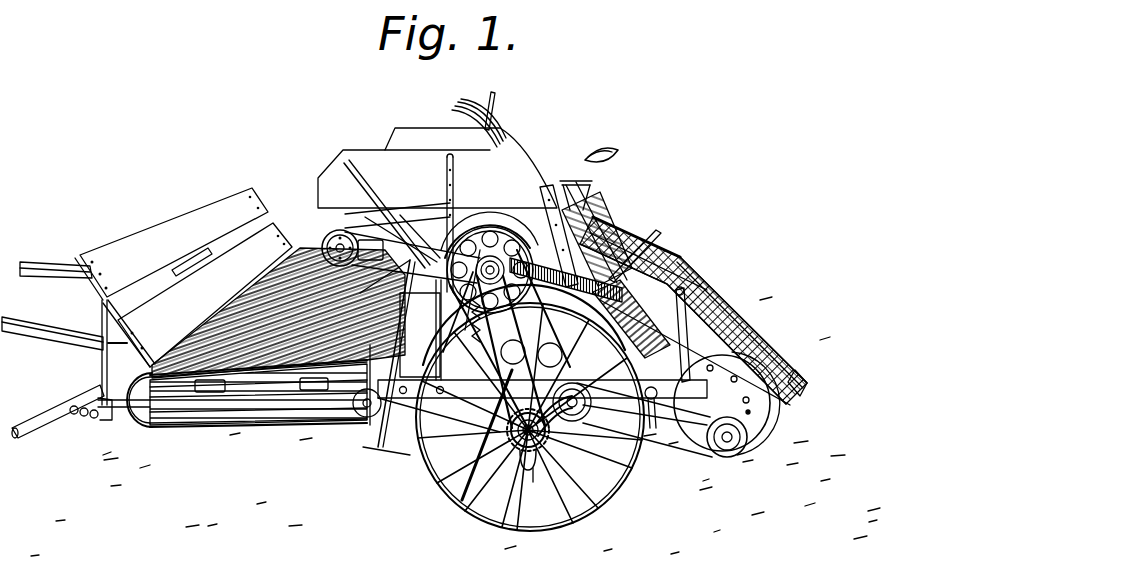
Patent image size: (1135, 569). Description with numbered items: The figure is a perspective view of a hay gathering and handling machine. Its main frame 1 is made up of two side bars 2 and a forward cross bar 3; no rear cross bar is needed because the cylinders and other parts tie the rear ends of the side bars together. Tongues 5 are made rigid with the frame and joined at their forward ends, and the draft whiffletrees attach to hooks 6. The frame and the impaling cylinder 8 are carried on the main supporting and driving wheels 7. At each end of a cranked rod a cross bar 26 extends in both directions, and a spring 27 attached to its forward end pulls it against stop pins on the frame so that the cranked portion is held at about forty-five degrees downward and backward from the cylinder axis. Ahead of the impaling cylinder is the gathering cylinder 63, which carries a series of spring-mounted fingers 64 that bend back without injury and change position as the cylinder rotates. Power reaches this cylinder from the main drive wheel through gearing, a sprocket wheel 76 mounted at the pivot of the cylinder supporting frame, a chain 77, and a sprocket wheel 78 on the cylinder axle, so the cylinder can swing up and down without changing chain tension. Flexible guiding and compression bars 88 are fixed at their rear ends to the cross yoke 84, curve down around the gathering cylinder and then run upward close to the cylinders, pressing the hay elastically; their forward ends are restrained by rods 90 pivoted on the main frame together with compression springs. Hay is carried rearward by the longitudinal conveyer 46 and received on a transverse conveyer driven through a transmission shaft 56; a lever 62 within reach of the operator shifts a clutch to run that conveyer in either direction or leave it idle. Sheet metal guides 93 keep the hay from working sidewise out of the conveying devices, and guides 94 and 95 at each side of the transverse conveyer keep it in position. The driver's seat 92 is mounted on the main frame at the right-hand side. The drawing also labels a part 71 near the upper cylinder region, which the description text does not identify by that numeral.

The main frame 1 is at (392, 400).
The side bars 2 is at (530, 408).
The forward cross bar 3 is at (490, 420).
The tongues 5 is at (72, 272).
The hooks 6 is at (78, 416).
The main supporting and driving wheels 7 is at (423, 433).
The impaling cylinder 8 is at (518, 452).
The cross bar 26 is at (510, 440).
The spring 27 is at (428, 445).
The longitudinal conveyer 46 is at (338, 236).
The transmission shaft 56 is at (254, 353).
The lever 62 is at (495, 97).
The gathering cylinder 63 is at (770, 427).
The fingers 64 is at (780, 352).
The drum 71 is at (497, 262).
The sprocket wheel 76 is at (570, 435).
The chain 77 is at (652, 432).
The sprocket wheel 78 is at (742, 447).
The cross yoke 84 is at (752, 328).
The flexible guiding and compression bars 88 is at (493, 132).
The rods 90 is at (662, 238).
The seat 92 is at (608, 150).
The sheet metal guides 93 is at (400, 152).
The guide 94 is at (230, 188).
The guide 95 is at (385, 452).